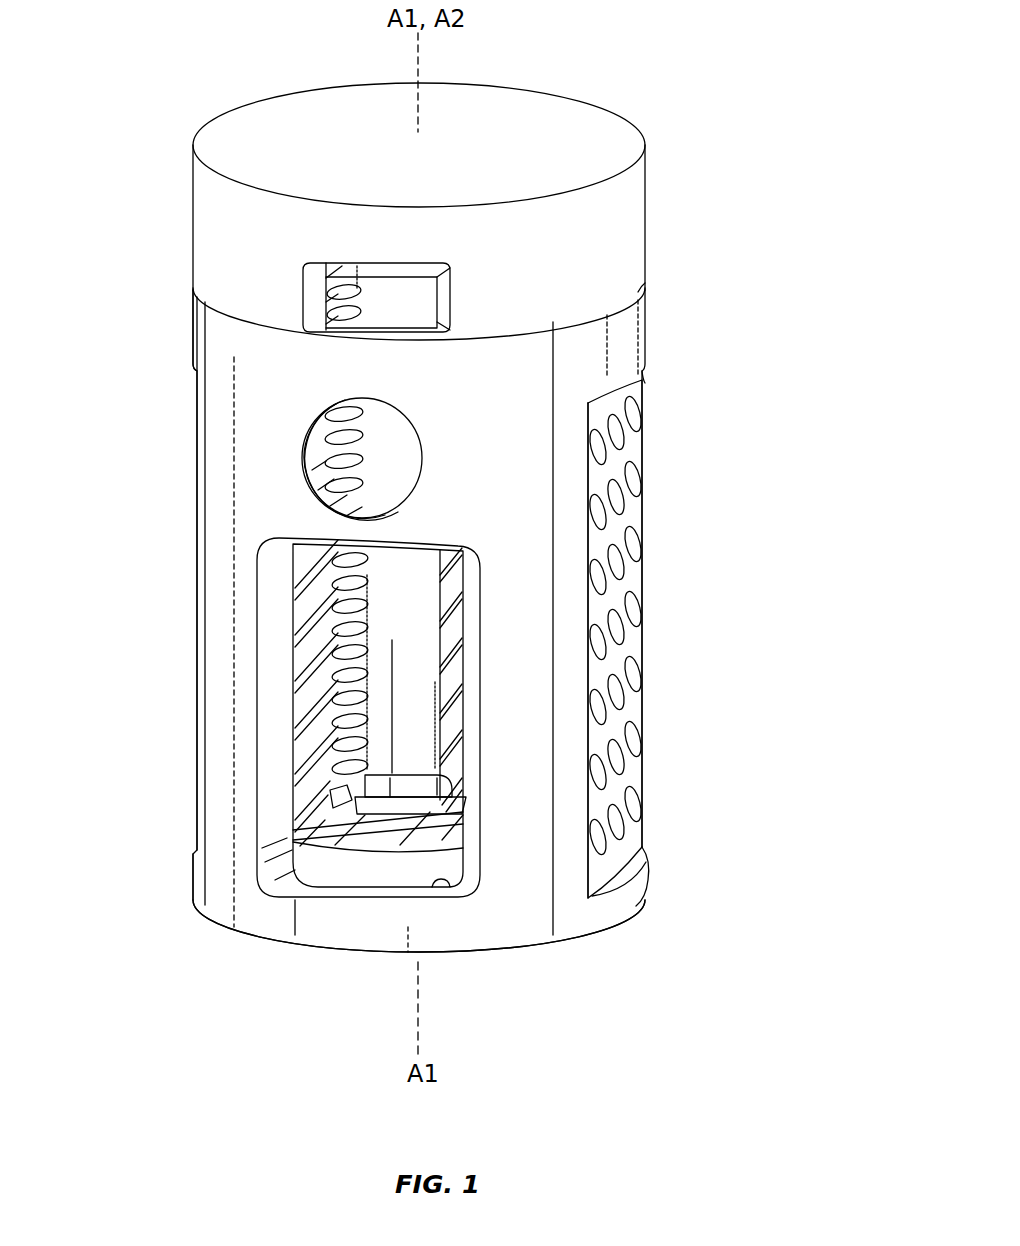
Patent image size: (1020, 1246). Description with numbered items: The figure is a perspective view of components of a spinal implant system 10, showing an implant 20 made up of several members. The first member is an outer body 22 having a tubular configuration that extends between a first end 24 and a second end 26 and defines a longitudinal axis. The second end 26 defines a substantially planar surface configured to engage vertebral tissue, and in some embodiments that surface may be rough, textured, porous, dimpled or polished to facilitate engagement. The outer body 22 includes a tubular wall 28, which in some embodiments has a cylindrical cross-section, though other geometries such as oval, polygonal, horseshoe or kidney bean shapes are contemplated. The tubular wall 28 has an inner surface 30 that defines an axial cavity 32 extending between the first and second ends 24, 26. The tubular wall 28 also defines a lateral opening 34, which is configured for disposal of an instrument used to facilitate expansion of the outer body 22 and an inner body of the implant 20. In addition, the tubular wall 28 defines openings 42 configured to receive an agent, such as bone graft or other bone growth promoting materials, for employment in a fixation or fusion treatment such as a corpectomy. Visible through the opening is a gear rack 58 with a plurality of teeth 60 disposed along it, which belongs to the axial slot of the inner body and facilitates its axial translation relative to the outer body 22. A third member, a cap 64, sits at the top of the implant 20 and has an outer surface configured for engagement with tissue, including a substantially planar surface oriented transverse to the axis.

The spinal implant system 10 is at (799, 39).
The implant 20 is at (705, 477).
The outer body 22 is at (220, 593).
The first end 24 is at (625, 318).
The second end 26 is at (610, 926).
The tubular wall 28 is at (212, 393).
The inner surface 30 is at (448, 888).
The axial cavity 32 is at (368, 862).
The lateral opening 34 is at (340, 453).
The openings 42 is at (640, 655).
The gear rack 58 is at (345, 716).
The teeth 60 is at (345, 653).
The cap 64 is at (627, 212).